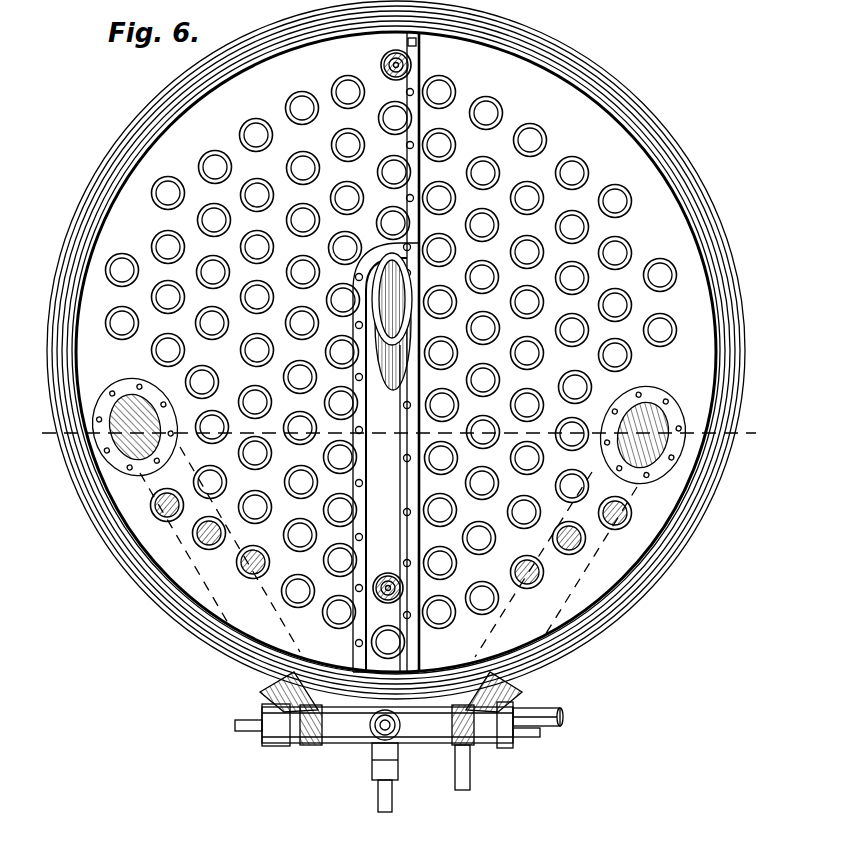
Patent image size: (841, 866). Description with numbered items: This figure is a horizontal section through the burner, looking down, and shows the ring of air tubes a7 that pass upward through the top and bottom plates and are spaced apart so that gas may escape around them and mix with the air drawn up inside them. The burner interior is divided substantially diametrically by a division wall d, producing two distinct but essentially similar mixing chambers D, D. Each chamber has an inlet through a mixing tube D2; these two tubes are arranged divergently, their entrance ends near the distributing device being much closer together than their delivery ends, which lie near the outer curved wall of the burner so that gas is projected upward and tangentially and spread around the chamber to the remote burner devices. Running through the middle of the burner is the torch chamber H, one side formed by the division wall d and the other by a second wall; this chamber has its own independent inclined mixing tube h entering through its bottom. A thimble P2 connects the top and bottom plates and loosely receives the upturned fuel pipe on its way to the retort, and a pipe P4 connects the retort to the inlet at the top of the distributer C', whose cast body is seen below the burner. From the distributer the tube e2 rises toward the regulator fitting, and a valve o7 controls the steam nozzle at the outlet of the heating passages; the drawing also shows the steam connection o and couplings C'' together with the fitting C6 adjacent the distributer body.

The division wall d is at (421, 63).
The thimble P2 is at (392, 75).
The air tubes a7 is at (271, 403).
The mixing chamber D is at (176, 303).
The mixing tube D2 is at (118, 441).
The torch mixing tube h is at (410, 327).
The torch chamber H is at (386, 457).
The pipe P4 is at (388, 578).
The outlet pipe o is at (553, 710).
The valve o7 is at (466, 772).
The distributer C' is at (374, 752).
The pipe couplings C'' is at (404, 738).
The valve C6 is at (396, 777).
The tube e2 is at (368, 742).